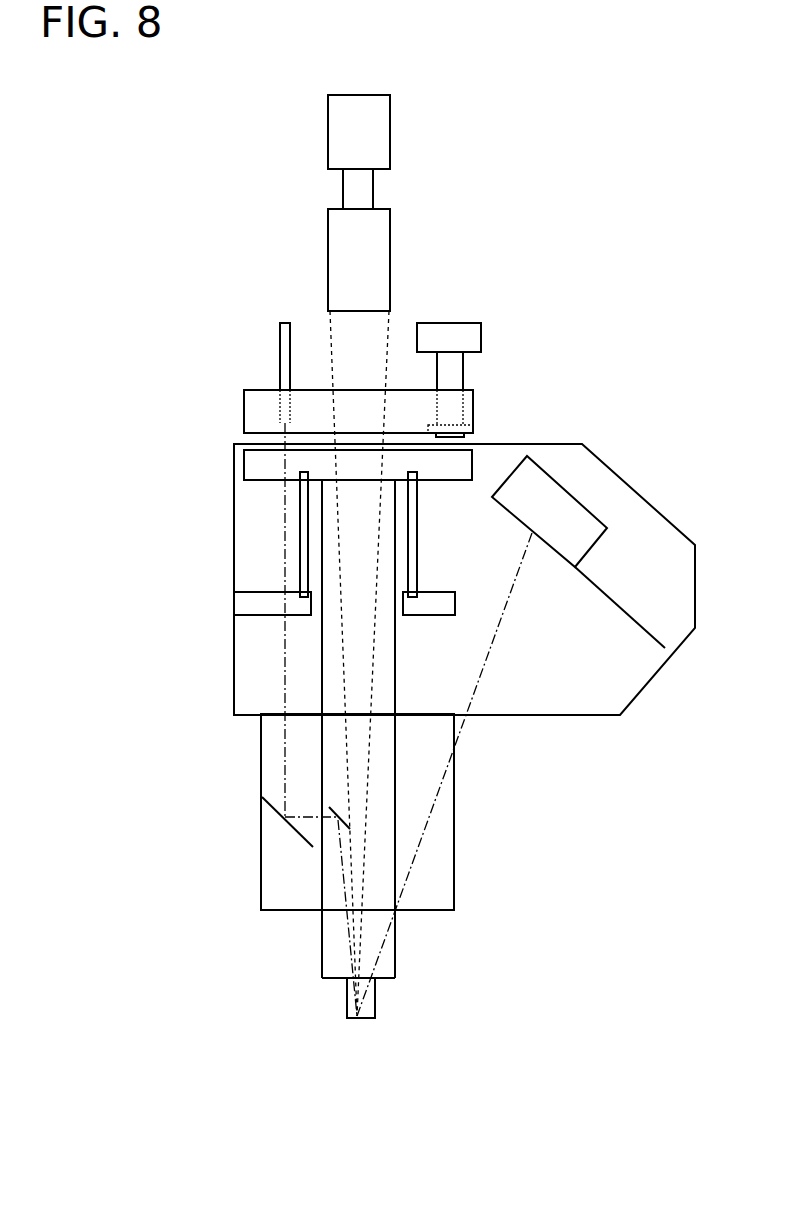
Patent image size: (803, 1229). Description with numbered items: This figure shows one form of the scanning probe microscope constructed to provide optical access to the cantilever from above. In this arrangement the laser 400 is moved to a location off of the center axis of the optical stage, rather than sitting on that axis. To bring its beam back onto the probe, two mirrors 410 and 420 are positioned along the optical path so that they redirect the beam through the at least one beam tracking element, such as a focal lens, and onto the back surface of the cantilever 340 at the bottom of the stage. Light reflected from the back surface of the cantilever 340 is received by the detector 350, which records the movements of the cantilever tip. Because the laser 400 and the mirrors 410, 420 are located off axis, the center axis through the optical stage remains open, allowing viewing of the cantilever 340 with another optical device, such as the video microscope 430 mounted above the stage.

The cantilever 340 is at (349, 1019).
The detector 350 is at (563, 503).
The laser 400 is at (280, 349).
The mirror 410 is at (263, 811).
The mirror 420 is at (331, 815).
The video microscope 430 is at (404, 186).